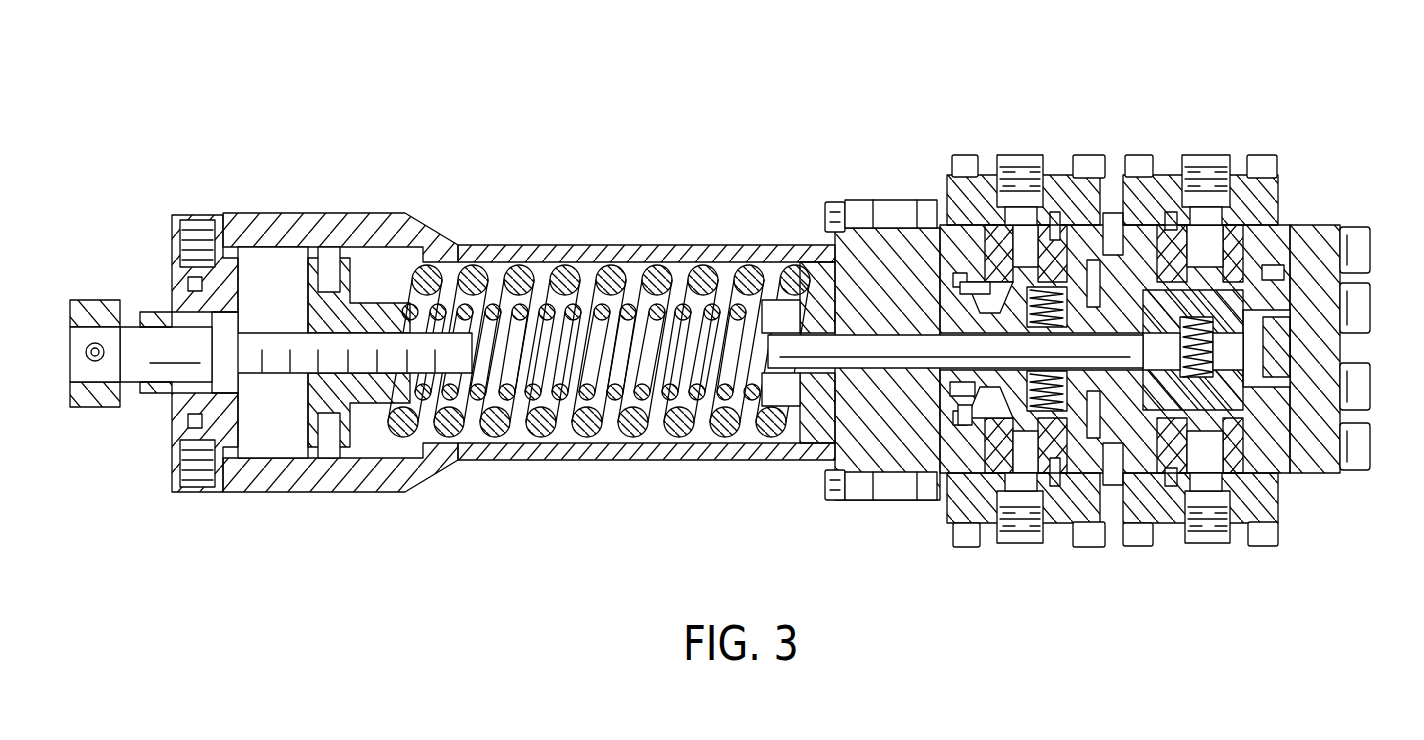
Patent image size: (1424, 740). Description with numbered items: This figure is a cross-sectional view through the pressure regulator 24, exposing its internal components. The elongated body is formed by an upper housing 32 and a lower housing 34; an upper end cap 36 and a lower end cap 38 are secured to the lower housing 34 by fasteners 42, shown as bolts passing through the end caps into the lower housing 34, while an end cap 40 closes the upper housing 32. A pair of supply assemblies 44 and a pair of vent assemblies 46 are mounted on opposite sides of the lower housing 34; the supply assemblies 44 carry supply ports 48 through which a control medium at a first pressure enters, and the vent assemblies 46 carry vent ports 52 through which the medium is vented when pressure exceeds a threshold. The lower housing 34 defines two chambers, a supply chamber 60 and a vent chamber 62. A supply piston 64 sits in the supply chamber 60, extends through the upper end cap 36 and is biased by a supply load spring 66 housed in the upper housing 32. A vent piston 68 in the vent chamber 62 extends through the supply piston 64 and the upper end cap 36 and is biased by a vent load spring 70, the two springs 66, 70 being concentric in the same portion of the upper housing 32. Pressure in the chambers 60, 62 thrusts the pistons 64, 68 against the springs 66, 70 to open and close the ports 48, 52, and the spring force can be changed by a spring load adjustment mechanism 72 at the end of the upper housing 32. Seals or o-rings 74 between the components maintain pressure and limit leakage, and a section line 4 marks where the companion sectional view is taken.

The pressure regulator 24 is at (543, 115).
The upper housing 32 is at (677, 246).
The lower housing 34 is at (1283, 228).
The upper end cap 36 is at (897, 246).
The lower end cap 38 is at (1315, 466).
The end cap 40 is at (180, 411).
The fasteners 42 is at (830, 498).
The supply assemblies 44 is at (1063, 153).
The vent assemblies 46 is at (1248, 153).
The supply ports 48 is at (1033, 168).
The vent ports 52 is at (1213, 168).
The supply chamber 60 is at (986, 290).
The vent chamber 62 is at (1253, 293).
The supply piston 64 is at (925, 375).
The supply load spring 66 is at (588, 425).
The vent piston 68 is at (1232, 384).
The vent load spring 70 is at (656, 398).
The spring load adjustment mechanism 72 is at (290, 300).
The seals or o-rings 74 is at (1274, 272).
The section line 4- 4 is at (1010, 153).